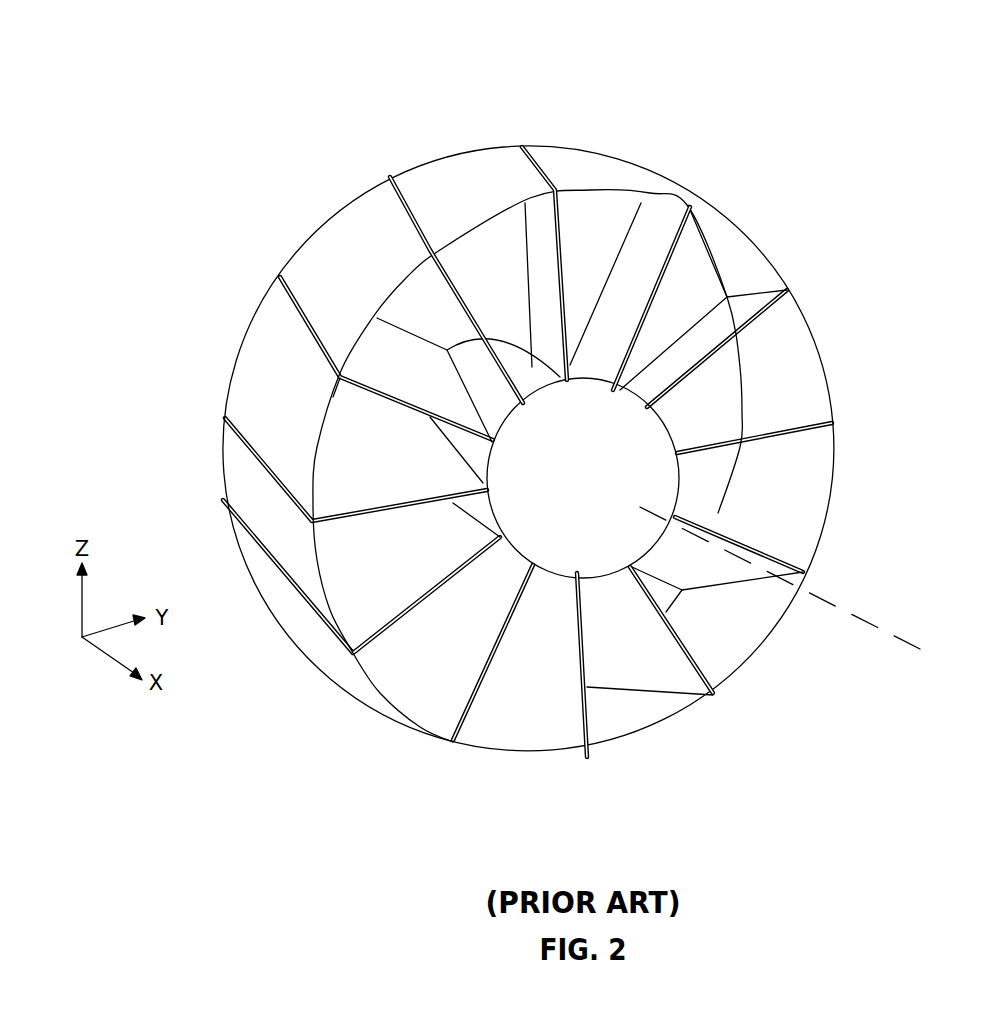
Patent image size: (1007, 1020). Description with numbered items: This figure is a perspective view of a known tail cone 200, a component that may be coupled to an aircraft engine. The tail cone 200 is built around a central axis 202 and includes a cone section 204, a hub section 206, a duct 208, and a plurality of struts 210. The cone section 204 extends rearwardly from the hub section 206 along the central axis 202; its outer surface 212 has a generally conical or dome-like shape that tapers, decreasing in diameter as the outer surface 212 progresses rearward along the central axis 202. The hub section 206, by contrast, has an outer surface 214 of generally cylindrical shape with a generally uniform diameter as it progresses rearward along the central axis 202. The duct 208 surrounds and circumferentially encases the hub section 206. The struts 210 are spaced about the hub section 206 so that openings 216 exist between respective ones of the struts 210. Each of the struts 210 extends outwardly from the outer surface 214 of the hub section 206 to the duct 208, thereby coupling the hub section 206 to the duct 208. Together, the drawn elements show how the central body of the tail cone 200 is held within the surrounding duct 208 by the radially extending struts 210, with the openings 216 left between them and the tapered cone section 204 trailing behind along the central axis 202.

The tail cone 200 is at (895, 78).
The central axis 202 is at (878, 607).
The cone section 204 is at (633, 473).
The hub section 206 is at (530, 370).
The duct 208 is at (270, 388).
The struts 210 is at (437, 657).
The outer surface 212 is at (607, 437).
The outer surface 214 is at (475, 372).
The openings 216 is at (505, 233).